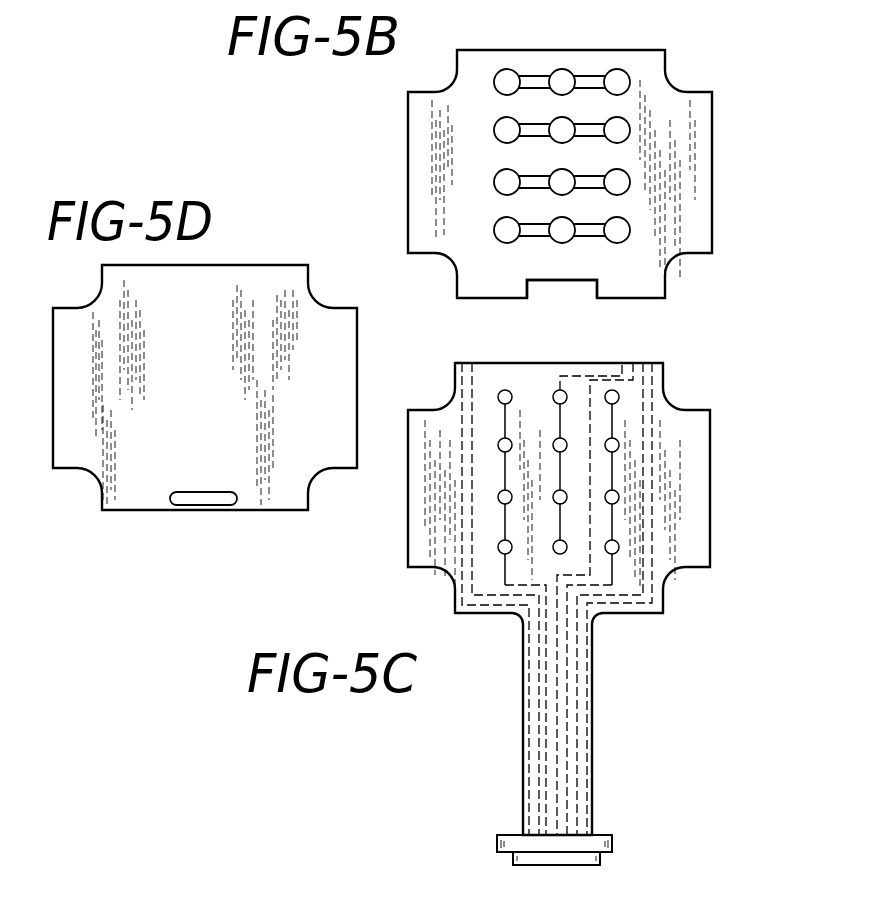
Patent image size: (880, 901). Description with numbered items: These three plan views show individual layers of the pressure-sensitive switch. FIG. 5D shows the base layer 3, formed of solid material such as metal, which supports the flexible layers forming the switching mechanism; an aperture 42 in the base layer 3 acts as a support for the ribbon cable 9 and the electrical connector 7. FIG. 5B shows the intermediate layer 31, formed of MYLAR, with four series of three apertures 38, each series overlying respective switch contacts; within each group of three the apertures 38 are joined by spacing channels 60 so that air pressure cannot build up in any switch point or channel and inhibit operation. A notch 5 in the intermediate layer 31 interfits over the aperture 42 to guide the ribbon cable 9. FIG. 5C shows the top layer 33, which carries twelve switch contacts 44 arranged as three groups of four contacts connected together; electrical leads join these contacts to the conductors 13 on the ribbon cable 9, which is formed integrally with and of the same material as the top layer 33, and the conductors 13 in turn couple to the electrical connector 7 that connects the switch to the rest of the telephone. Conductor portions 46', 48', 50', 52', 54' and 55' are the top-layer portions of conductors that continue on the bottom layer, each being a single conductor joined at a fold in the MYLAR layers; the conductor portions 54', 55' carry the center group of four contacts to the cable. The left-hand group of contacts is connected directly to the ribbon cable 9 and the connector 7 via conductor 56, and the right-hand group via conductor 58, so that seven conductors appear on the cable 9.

In FIG. 5B, the intermediate layer 31 is at (684, 80).
In FIG. 5B, the apertures 38 is at (495, 84).
In FIG. 5B, the spacing channels 60 is at (587, 75).
In FIG. 5B, the notch 5 is at (572, 300).
In FIG. 5C, the top layer 33 is at (700, 398).
In FIG. 5C, the switch contacts 44 is at (498, 498).
In FIG. 5C, the conductor portion 54' is at (463, 575).
In FIG. 5C, the conductor portion 52' is at (503, 571).
In FIG. 5C, the conductor portion 55' is at (597, 349).
In FIG. 5C, the conductor portion 50' is at (676, 599).
In FIG. 5C, the conductor portion 46' is at (647, 567).
In FIG. 5C, the conductor portion 48' is at (673, 577).
In FIG. 5C, the conductor 56 is at (514, 588).
In FIG. 5C, the conductor 58 is at (610, 592).
In FIG. 5C, the conductors 13 is at (568, 668).
In FIG. 5C, the ribbon cable 9 is at (519, 738).
In FIG. 5C, the electrical connector 7 is at (612, 843).
In FIG. 5D, the base layer 3 is at (116, 501).
In FIG. 5D, the aperture 42 is at (192, 494).